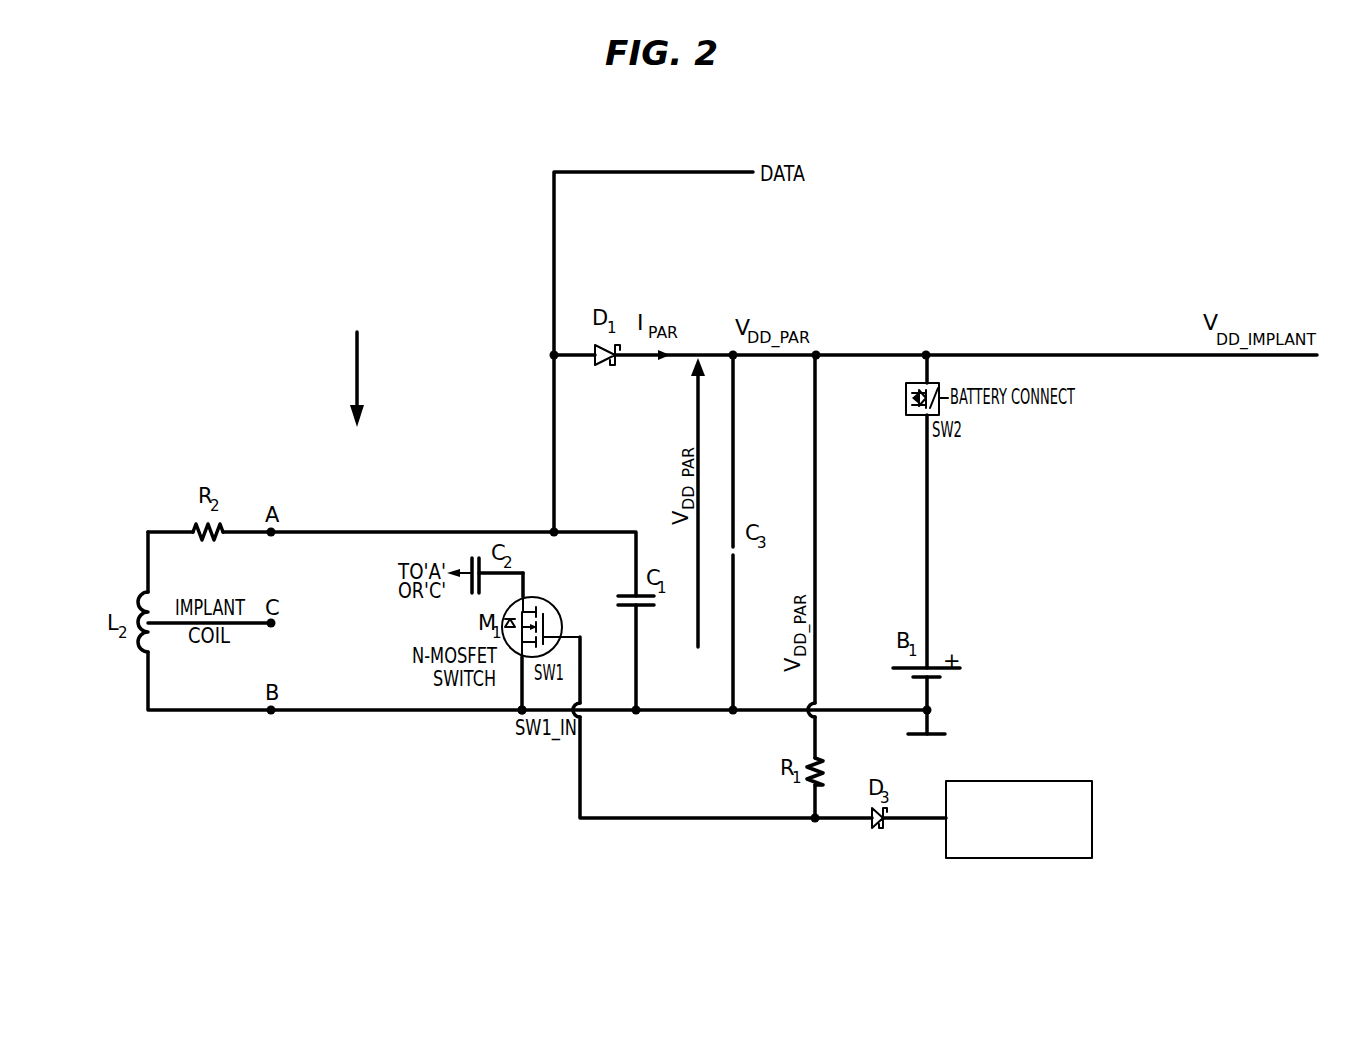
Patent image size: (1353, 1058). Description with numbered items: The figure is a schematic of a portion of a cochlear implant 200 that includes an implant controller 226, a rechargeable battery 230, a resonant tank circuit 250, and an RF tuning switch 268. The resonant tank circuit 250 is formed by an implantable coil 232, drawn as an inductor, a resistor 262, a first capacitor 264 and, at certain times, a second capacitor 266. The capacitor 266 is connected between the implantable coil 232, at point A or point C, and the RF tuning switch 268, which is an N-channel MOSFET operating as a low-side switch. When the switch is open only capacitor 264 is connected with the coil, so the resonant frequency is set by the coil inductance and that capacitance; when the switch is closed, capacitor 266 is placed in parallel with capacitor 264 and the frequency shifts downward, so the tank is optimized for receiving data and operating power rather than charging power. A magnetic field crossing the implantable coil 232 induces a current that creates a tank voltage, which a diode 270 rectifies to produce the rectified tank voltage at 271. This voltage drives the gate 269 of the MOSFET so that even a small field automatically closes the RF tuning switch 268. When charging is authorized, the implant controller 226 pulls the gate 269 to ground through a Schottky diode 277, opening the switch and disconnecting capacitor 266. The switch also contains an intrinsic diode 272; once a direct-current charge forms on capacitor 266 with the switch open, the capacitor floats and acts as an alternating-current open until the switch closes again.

The cochlear implant 200 is at (428, 901).
The implant controller 226 is at (1093, 815).
The rechargeable battery 230 is at (975, 660).
The implantable coil 232 is at (138, 650).
The resonant tank circuit 250 is at (358, 338).
The resistor 262 is at (192, 530).
The capacitor 264 is at (650, 607).
The capacitor 266 is at (470, 590).
The RF tuning switch 268 is at (534, 555).
The gate 269 is at (560, 615).
The diode 270 is at (598, 364).
The rectified tank voltage 271 is at (683, 353).
The intrinsic diode 272 is at (522, 712).
The Schottky diode 277 is at (873, 823).